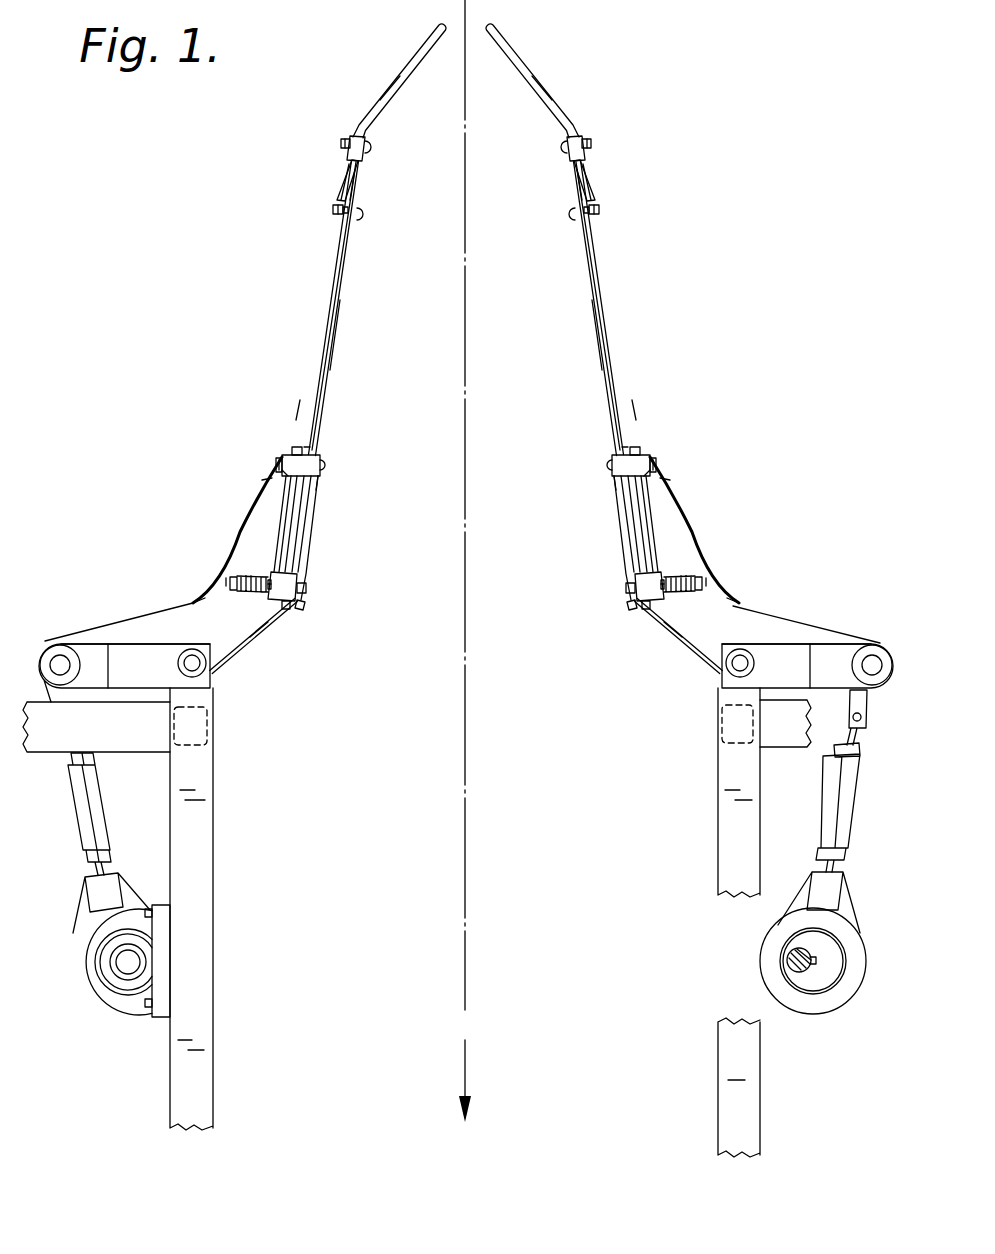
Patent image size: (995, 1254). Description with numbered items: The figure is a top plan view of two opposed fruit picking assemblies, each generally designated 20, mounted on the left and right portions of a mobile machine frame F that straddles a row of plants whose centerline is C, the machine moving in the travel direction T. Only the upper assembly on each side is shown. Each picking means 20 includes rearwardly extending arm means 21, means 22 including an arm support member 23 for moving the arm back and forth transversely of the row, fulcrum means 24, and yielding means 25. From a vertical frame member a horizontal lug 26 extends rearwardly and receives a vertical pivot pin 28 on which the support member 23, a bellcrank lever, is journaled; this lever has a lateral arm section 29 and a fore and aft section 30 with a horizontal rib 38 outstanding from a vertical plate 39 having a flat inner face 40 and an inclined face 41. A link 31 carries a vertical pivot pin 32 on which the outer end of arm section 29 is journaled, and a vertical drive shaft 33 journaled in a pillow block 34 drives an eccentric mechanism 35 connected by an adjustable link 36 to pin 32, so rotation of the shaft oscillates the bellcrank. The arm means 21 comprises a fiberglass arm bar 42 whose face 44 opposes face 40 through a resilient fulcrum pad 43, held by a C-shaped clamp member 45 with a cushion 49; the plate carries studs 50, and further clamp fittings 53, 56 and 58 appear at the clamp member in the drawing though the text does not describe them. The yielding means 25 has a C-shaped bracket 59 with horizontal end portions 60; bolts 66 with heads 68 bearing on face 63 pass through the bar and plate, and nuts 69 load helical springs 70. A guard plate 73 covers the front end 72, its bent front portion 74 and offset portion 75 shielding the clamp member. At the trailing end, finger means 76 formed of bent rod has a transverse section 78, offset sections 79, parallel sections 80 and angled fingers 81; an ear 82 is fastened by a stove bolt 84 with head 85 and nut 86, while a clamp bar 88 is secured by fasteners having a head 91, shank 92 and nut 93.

The fruit picking means 20 is at (344, 419).
The arm means 21 is at (342, 337).
The means for moving the arm means 22 is at (49, 630).
The arm support member 23 is at (244, 514).
The fulcrum means 24 is at (300, 437).
The yielding means 25 is at (220, 558).
The lug 26 is at (214, 690).
The pivot pin 28 is at (180, 650).
The lateral arm section 29 is at (110, 644).
The fore and aft section 30 is at (266, 482).
The link 31 is at (145, 644).
The pivot pin 32 is at (48, 651).
The drive shaft 33 is at (141, 962).
The bearing pillow block 34 is at (165, 935).
The eccentric mechanism 35 is at (80, 982).
The adjustable link 36 is at (70, 826).
The horizontal rib 38 is at (191, 612).
The vertical plate 39 is at (280, 525).
The inner flat vertical face 40 is at (292, 540).
The inclined inner flat face 41 is at (262, 630).
The arm bar 42 is at (344, 276).
The fulcrum pad 43 is at (304, 489).
The face of the arm bar 44 is at (294, 518).
The clamp member 45 is at (321, 468).
The cushion or pad 49 is at (324, 460).
The studs 50 is at (278, 460).
The nut 53 is at (295, 450).
The bolt 56 is at (280, 456).
The clamp jaw 58 is at (280, 468).
The C-shaped bracket 59 is at (292, 605).
The horizontal end portions 60 is at (275, 582).
The face of the arm bar 63 is at (330, 380).
The bolt 66 is at (229, 581).
The bolt head 68 is at (307, 588).
The nut 69 is at (237, 591).
The spring means 70 is at (250, 593).
The front end of arm bar 72 is at (299, 612).
The guard plate 73 is at (307, 562).
The front portion of the guard plate 74 is at (245, 652).
The trailing laterally offset portion 75 is at (318, 480).
The finger means 76 is at (392, 113).
The central transverse vertical section 78 is at (338, 197).
The offset sections 79 is at (340, 180).
The parallel horizontal sections 80 is at (357, 172).
The angled fingers 81 is at (415, 40).
The ear 82 is at (341, 220).
The stove bolt 84 is at (333, 211).
The bolt head 85 is at (364, 215).
The nut 86 is at (335, 216).
The clamp bar 88 is at (367, 158).
The fastener head 91 is at (371, 147).
The fastener shank 92 is at (341, 142).
The nut 93 is at (345, 137).
The centerline C is at (468, 689).
The machine frame F is at (206, 1000).
The travel direction T is at (470, 1050).